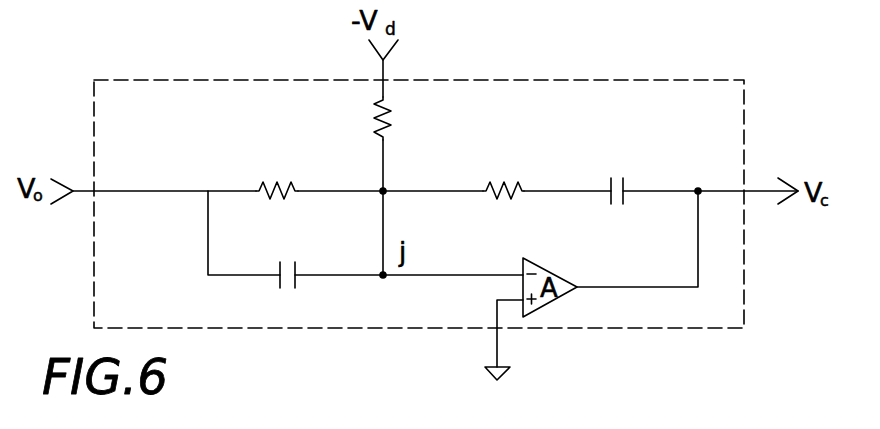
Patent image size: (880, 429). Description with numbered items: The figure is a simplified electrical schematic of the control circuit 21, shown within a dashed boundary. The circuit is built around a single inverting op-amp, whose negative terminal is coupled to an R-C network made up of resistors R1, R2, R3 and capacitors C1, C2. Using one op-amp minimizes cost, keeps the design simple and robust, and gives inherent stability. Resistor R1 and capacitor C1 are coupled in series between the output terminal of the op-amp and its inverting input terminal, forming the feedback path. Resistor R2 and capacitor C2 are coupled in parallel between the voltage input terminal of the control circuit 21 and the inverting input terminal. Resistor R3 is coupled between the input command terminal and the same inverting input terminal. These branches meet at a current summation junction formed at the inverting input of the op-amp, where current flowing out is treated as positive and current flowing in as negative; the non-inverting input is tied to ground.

The control circuit 21 is at (628, 80).
The resistor R1 is at (503, 170).
The resistor R2 is at (277, 170).
The resistor R3 is at (400, 123).
The capacitor C1 is at (618, 172).
The capacitor C2 is at (292, 256).